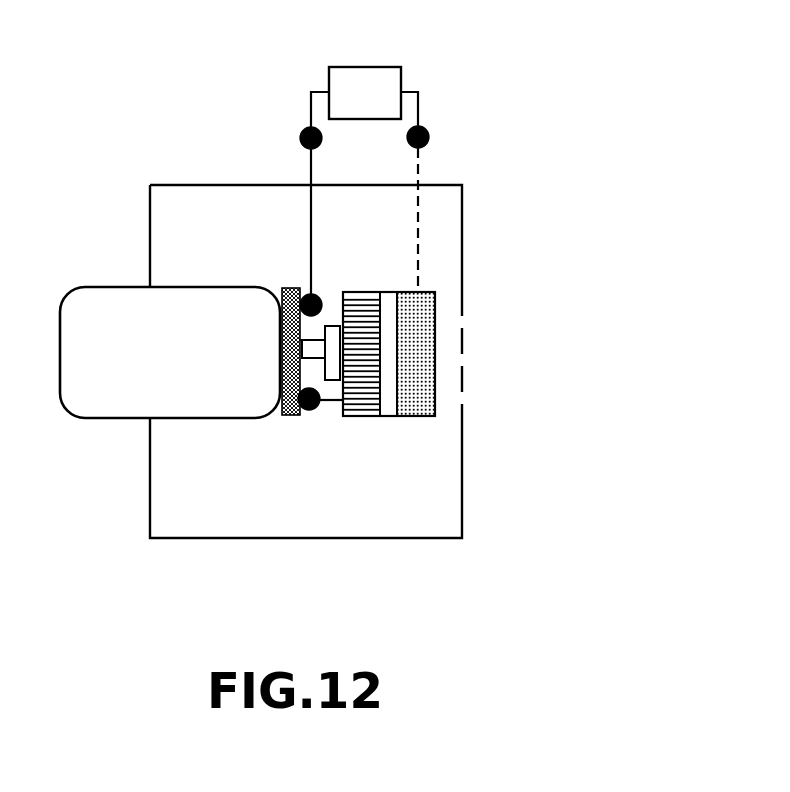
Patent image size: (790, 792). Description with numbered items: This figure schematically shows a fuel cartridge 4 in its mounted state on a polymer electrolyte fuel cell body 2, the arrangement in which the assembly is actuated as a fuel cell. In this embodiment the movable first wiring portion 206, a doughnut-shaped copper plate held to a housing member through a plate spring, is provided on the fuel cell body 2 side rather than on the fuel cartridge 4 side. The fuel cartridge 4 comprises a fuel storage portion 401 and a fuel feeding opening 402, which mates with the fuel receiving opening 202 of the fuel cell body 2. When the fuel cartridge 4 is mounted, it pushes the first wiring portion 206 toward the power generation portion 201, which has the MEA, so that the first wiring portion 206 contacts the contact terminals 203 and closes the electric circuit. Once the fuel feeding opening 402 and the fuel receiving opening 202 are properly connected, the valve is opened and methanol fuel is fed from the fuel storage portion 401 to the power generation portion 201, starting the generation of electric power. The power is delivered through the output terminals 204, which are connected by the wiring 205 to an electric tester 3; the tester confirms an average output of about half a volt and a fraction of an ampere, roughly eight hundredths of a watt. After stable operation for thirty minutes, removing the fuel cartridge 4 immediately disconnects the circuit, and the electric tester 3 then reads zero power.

The fuel cell body 2 is at (415, 540).
The electric tester 3 is at (366, 76).
The fuel cartridge 4 is at (192, 476).
The fuel storage portion 401 is at (218, 418).
The fuel feeding opening 402 is at (307, 360).
The power generation portion 201 is at (343, 420).
The fuel receiving opening 202 is at (333, 326).
The contact terminals 203 is at (309, 296).
The output terminals 204 is at (306, 131).
The wiring 205 is at (306, 211).
The first wiring portion 206 is at (288, 288).